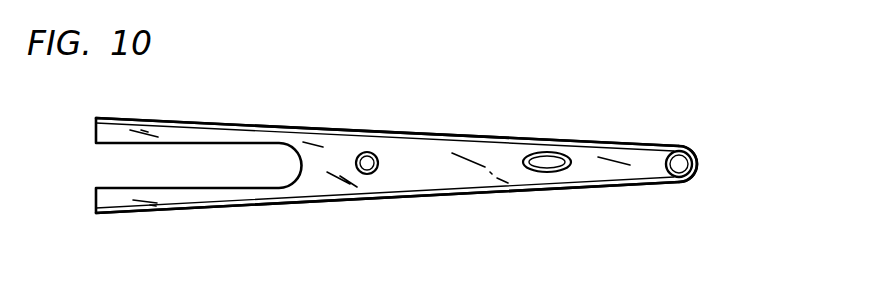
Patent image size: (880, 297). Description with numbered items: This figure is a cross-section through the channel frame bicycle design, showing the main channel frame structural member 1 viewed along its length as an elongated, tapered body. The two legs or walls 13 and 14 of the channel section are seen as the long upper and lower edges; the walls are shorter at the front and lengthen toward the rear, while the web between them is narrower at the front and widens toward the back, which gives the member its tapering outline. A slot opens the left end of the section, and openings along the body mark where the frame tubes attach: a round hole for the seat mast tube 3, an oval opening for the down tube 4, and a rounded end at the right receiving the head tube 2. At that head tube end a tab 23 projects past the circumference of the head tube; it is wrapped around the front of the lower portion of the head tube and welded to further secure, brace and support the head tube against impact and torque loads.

The main channel frame structural member 1 is at (436, 183).
The head tube 2 is at (682, 178).
The seat mast tube 3 is at (370, 152).
The down tube 4 is at (550, 166).
The leg or wall 13 is at (186, 209).
The leg or wall 14 is at (195, 122).
The tab 23 is at (696, 160).